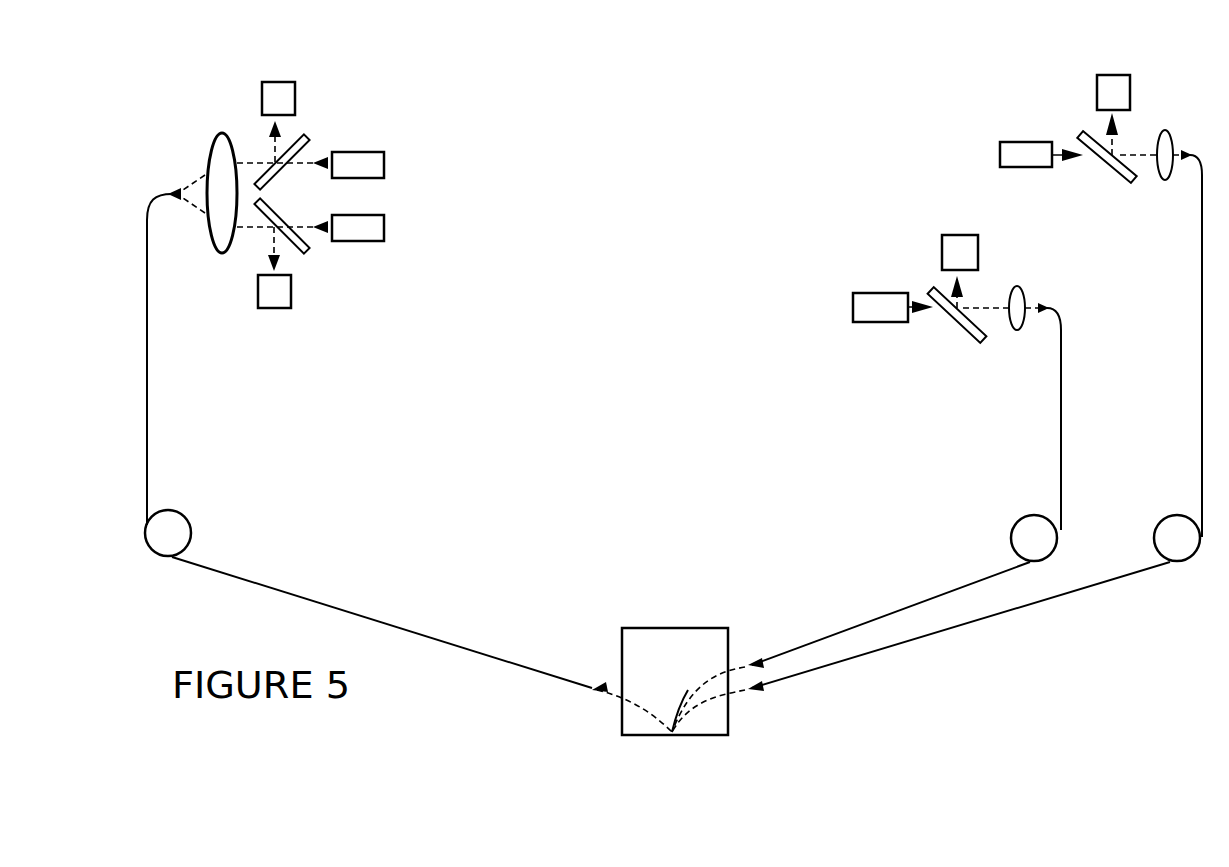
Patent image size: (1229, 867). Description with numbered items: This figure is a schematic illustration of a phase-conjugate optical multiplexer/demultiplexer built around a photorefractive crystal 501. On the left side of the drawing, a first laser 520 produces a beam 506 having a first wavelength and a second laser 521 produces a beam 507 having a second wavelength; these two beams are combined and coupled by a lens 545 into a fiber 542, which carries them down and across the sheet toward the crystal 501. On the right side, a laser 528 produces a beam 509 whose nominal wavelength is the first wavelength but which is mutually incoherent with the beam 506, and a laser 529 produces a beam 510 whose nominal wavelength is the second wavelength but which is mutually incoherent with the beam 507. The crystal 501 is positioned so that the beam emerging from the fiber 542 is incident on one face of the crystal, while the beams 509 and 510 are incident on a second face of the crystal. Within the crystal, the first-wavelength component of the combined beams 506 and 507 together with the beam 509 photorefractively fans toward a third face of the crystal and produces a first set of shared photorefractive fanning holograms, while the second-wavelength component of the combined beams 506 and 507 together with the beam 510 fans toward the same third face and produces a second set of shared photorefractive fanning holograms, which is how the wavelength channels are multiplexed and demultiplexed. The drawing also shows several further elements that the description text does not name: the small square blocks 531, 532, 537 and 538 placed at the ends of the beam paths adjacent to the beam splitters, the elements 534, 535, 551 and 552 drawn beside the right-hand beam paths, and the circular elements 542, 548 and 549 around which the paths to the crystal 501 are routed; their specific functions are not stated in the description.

The photorefractive crystal 501 is at (662, 628).
The beam 506 is at (312, 230).
The beam 507 is at (313, 160).
The beam 509 is at (933, 310).
The beam 510 is at (1087, 158).
The first laser 520 is at (384, 228).
The second laser 521 is at (384, 164).
The laser 528 is at (877, 293).
The laser 529 is at (1000, 155).
The detector 531 is at (258, 292).
The detector 532 is at (283, 82).
The detector leader 534 is at (983, 338).
The detector leader 535 is at (1130, 182).
The detector 537 is at (967, 235).
The detector 538 is at (1097, 92).
The fiber 542 is at (176, 510).
The lens 545 is at (208, 158).
The roller 548 is at (1012, 528).
The roller 549 is at (1157, 525).
The lens 551 is at (1023, 292).
The lens 552 is at (1173, 143).